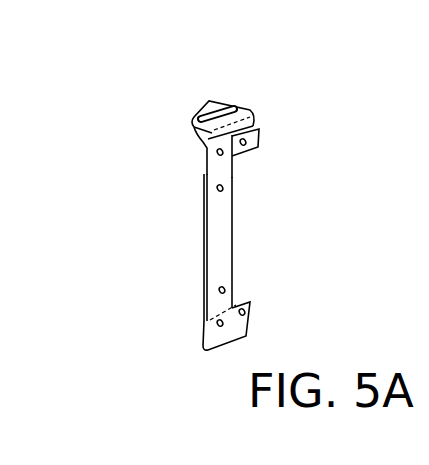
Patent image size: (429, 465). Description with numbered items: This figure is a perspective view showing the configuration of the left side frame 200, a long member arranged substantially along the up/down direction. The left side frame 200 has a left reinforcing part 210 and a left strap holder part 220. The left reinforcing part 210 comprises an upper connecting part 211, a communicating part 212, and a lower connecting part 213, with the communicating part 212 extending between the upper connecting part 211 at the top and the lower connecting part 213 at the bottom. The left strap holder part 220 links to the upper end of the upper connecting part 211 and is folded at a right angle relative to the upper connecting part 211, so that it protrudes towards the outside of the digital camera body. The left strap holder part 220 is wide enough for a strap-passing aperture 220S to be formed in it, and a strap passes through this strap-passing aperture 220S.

The left side frame 200 is at (320, 76).
The left reinforcing part 210 is at (113, 210).
The upper connecting part 211 is at (200, 163).
The communicating part 212 is at (217, 237).
The lower connecting part 213 is at (208, 338).
The left strap holder part 220 is at (201, 134).
The strap-passing aperture 220S is at (227, 104).